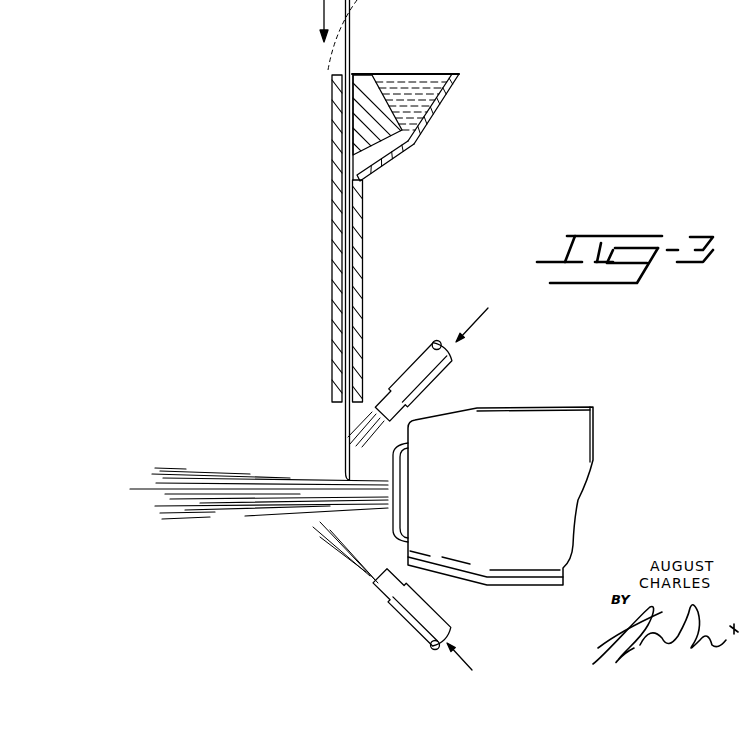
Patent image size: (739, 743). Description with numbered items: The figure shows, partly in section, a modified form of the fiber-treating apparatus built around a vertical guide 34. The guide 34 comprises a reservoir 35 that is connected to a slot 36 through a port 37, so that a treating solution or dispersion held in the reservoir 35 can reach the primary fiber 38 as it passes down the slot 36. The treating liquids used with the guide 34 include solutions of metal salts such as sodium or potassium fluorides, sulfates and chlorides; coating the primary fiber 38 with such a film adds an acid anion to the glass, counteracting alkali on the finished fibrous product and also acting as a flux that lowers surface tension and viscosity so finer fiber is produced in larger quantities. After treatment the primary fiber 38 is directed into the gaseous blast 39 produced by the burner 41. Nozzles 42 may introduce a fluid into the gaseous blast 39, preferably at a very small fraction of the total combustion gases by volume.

The vertical guide 34 is at (362, 271).
The reservoir 35 is at (417, 98).
The slot 36 is at (352, 121).
The port 37 is at (377, 153).
The primary fiber 38 is at (344, 422).
The gaseous blast 39 is at (268, 500).
The burner 41 is at (570, 417).
The nozzles 42 is at (441, 366).